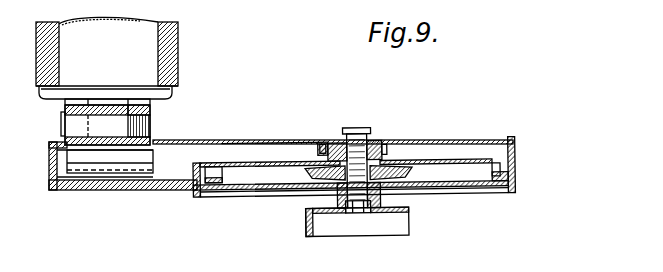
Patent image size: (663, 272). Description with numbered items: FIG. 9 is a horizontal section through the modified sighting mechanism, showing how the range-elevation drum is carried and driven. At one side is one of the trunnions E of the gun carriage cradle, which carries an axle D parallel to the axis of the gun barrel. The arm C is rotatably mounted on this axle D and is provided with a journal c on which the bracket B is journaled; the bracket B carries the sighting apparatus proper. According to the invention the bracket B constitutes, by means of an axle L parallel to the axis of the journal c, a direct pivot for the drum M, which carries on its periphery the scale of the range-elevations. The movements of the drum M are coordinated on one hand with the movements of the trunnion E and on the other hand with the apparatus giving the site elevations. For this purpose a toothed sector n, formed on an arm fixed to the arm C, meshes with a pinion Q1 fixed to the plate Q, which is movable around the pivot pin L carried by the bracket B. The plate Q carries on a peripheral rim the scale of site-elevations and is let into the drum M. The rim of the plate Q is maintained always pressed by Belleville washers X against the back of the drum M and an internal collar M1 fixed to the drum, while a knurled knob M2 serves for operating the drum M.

The trunnion E is at (143, 53).
The axle D is at (144, 124).
The bracket B is at (68, 186).
The arm C is at (112, 143).
The journal c is at (125, 178).
The internal collar M1 is at (210, 167).
The plate Q is at (262, 164).
The toothed sector n is at (322, 145).
The axle L is at (355, 150).
The pinion Q1 is at (380, 145).
The drum M is at (248, 188).
The Belleville washers X is at (312, 193).
The knurled knob M2 is at (410, 228).